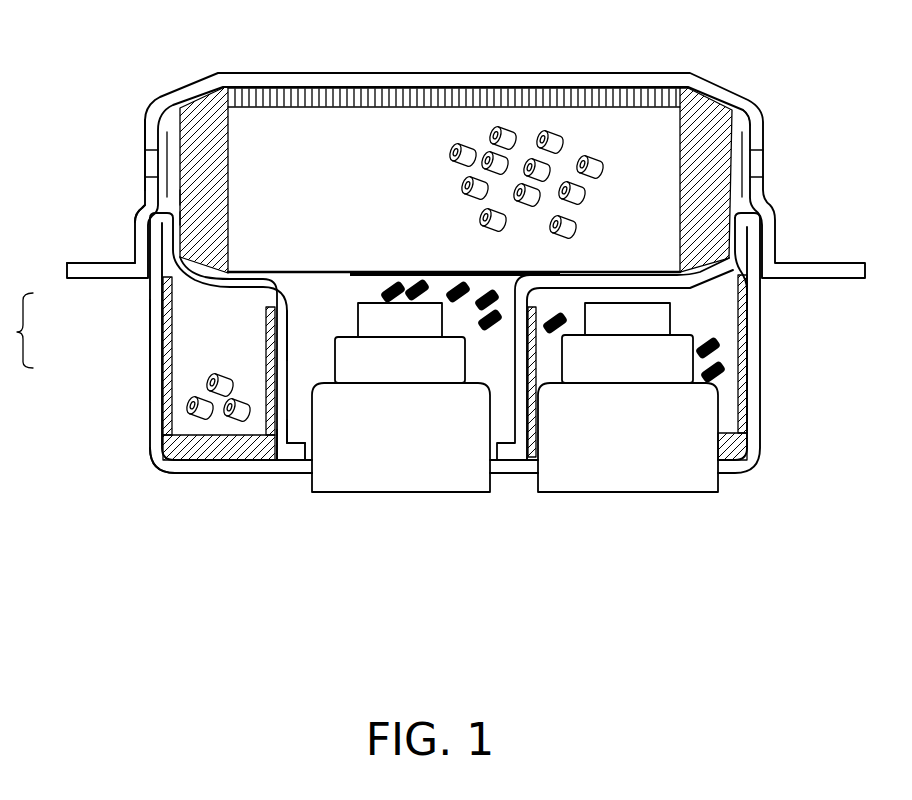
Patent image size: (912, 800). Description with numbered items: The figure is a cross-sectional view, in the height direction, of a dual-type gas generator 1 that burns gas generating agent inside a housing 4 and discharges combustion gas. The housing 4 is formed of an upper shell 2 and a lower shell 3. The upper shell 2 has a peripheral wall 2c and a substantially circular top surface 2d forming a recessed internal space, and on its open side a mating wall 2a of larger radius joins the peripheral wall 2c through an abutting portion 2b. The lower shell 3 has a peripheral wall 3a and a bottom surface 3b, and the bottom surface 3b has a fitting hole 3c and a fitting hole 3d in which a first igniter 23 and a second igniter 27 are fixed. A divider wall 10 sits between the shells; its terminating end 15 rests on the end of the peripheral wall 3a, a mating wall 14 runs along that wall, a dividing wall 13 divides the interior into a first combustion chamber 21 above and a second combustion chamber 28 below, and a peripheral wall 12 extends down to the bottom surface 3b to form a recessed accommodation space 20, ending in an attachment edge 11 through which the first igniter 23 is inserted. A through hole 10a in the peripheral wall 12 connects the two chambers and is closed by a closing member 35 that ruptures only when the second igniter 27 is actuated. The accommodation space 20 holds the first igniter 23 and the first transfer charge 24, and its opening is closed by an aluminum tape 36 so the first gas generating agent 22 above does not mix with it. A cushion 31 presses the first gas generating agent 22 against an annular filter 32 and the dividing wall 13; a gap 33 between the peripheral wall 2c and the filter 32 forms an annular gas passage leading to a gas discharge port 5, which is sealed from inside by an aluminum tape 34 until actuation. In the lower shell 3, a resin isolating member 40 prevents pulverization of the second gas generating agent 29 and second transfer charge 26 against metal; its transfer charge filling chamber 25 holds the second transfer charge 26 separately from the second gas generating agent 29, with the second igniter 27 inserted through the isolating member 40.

The gas generator 1 is at (97, 577).
The upper shell 2 is at (83, 273).
The mating wall 2a is at (140, 243).
The abutting portion 2b is at (140, 210).
The peripheral wall 2c is at (150, 128).
The top surface 2d is at (505, 73).
The lower shell 3 is at (147, 322).
The peripheral wall 3a is at (148, 355).
The bottom surface 3b is at (230, 470).
The fitting hole 3c is at (307, 473).
The fitting hole 3d is at (525, 473).
The housing 4 is at (16, 330).
The gas discharge port 5 is at (150, 163).
The divider wall 10 is at (300, 160).
The through hole 10a is at (257, 462).
The attachment edge 11 is at (298, 447).
The peripheral wall 12 is at (290, 317).
The dividing wall 13 is at (247, 273).
The mating wall 14 is at (183, 218).
The terminating end 15 is at (183, 195).
The accommodation space 20 is at (408, 424).
The first combustion chamber 21 is at (647, 155).
The first gas generating agent 22 is at (552, 138).
The first igniter 23 is at (410, 478).
The first transfer charge 24 is at (483, 333).
The transfer charge filling chamber 25 is at (707, 318).
The second transfer charge 26 is at (720, 373).
The second igniter 27 is at (640, 478).
The second combustion chamber 28 is at (186, 328).
The second gas generating agent 29 is at (170, 450).
The cushion 31 is at (322, 88).
The filter 32 is at (710, 100).
The gap 33 is at (742, 118).
The aluminum tape 34 is at (183, 150).
The closing member 35 is at (180, 414).
The aluminum tape 36 is at (437, 271).
The isolating member 40 is at (158, 472).